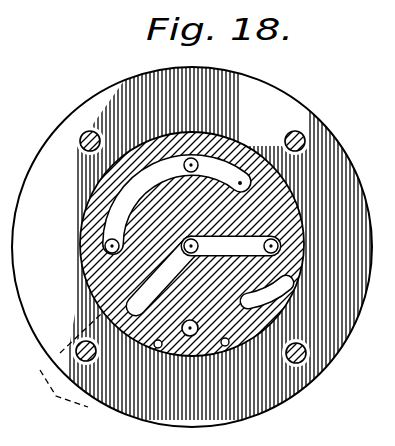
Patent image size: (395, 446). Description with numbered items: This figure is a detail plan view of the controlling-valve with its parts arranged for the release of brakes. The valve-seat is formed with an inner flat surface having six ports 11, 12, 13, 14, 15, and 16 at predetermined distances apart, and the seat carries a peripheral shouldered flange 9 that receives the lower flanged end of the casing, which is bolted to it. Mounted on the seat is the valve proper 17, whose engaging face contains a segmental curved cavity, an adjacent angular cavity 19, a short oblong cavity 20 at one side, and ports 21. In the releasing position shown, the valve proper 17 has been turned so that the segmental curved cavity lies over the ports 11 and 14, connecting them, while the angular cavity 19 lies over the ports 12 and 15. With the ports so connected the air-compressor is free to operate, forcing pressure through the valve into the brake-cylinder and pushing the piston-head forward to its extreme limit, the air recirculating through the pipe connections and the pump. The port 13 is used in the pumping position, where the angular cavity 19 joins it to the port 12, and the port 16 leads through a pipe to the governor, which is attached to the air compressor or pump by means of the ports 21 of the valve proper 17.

The peripheral shouldered flange 9 is at (197, 247).
The port 11 is at (177, 199).
The port 12 is at (195, 238).
The port 13 is at (181, 329).
The port 14 is at (97, 240).
The port 15 is at (270, 238).
The port 16 is at (240, 171).
The valve proper 17 is at (184, 247).
The angular cavity 19 is at (118, 293).
The short oblong cavity 20 is at (279, 288).
The ports 21 is at (150, 340).